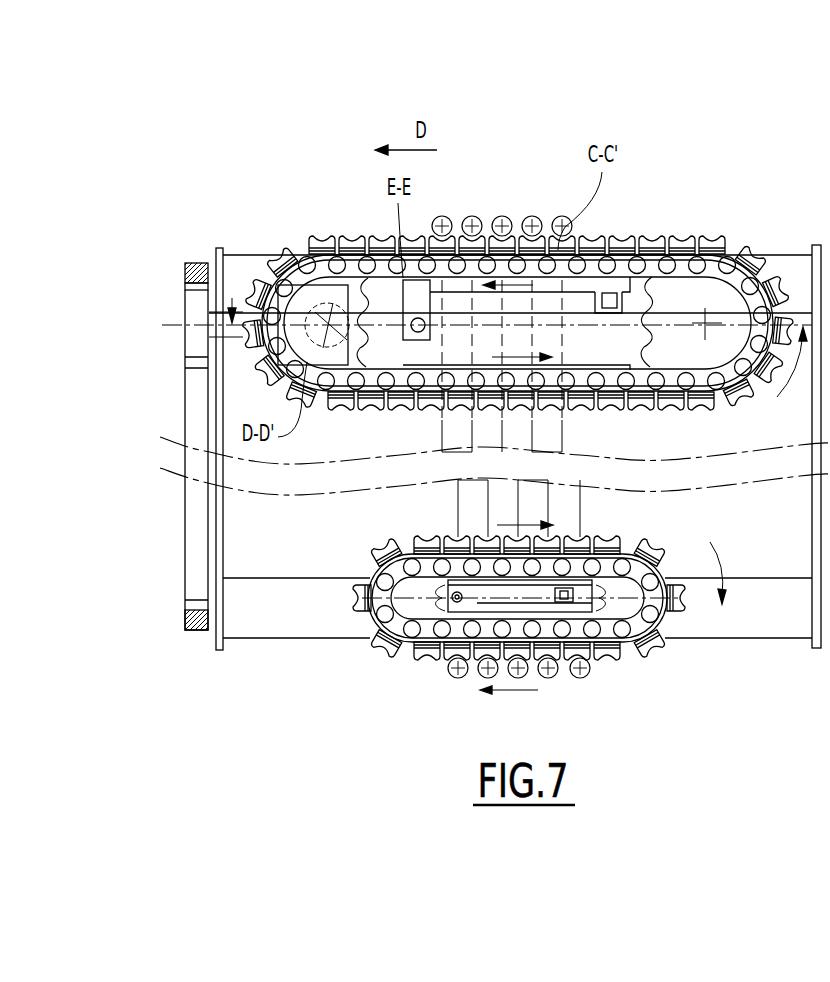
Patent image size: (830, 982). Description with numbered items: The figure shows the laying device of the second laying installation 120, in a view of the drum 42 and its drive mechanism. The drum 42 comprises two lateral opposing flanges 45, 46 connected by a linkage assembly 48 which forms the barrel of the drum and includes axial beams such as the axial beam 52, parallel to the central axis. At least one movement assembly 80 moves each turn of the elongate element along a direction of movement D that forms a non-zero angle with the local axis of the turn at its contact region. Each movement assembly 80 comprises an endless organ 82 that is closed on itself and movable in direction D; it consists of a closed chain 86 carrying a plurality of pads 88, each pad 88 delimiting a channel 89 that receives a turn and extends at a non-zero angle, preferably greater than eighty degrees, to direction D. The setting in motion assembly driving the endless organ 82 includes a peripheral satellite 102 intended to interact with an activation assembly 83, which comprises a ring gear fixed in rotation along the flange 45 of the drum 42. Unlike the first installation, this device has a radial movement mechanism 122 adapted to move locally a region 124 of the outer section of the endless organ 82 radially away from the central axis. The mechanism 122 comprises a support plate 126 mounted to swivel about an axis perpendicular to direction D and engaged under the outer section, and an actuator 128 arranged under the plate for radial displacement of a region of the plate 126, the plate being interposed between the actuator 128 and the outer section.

The second laying installation 120 is at (278, 148).
The movement assembly 80 is at (256, 395).
The endless organ 82 is at (520, 255).
The activation assembly 83 is at (817, 243).
The closed chain 86 is at (262, 290).
The pad 88 is at (297, 245).
The channel 89 is at (314, 237).
The peripheral satellite 102 is at (193, 311).
The radial movement mechanism 122 is at (577, 316).
The region of the outer section 124 is at (620, 312).
The support plate 126 is at (424, 333).
The actuator 128 is at (625, 325).
The axial beam 52 is at (230, 273).
The drum 42 is at (173, 623).
The flange 45 is at (220, 527).
The flange 46 is at (812, 508).
The linkage assembly 48 is at (253, 655).